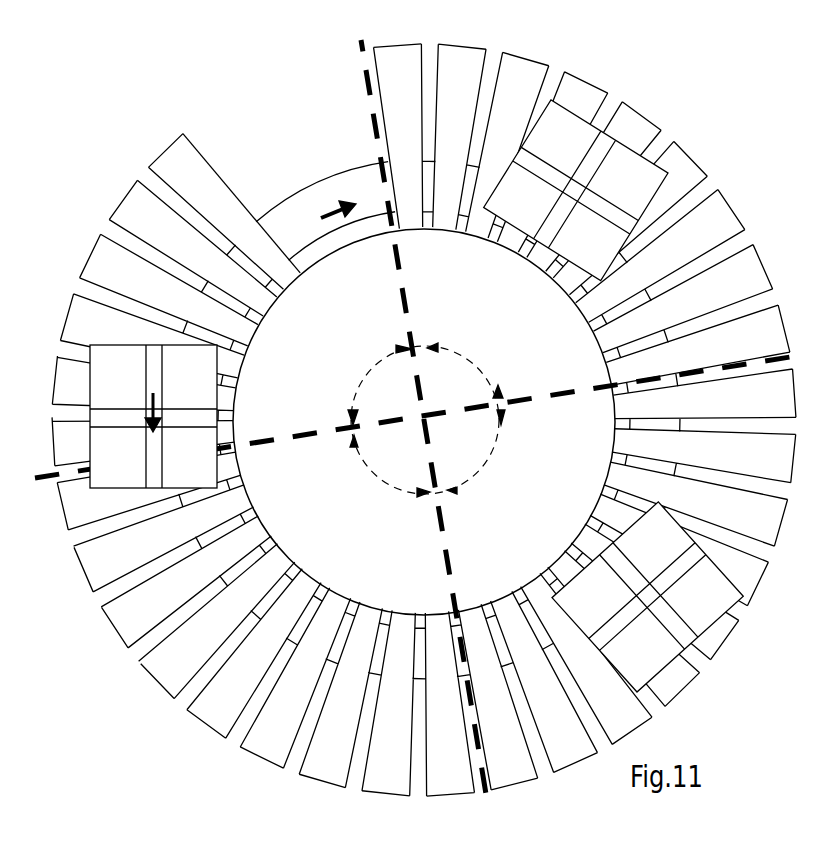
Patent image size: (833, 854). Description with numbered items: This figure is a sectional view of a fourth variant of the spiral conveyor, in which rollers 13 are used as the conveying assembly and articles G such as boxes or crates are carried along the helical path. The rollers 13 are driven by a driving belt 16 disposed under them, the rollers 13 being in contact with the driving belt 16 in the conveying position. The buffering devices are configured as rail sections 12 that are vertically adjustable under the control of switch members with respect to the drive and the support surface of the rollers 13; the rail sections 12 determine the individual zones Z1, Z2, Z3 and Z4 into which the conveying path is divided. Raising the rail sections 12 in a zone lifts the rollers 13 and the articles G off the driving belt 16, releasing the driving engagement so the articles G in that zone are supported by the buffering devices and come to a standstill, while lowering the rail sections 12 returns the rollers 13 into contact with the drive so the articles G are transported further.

The rail section 12 is at (313, 260).
The roller 13 is at (140, 197).
The driving belt 16 is at (290, 232).
The article G is at (640, 178).
The zone Z1 is at (452, 353).
The zone Z2 is at (512, 434).
The zone Z3 is at (407, 497).
The zone Z4 is at (350, 394).